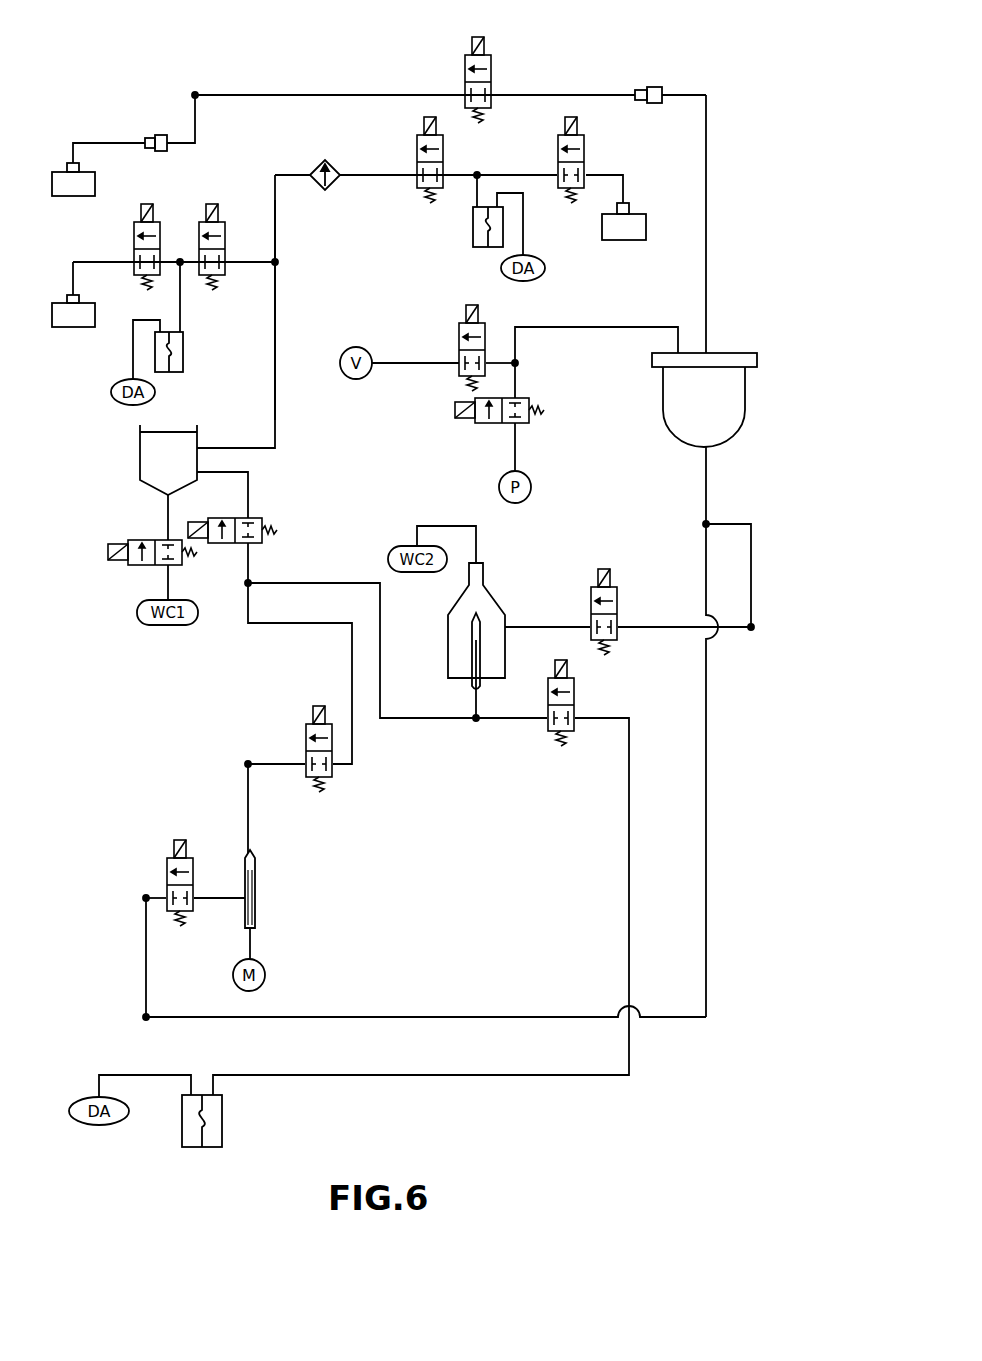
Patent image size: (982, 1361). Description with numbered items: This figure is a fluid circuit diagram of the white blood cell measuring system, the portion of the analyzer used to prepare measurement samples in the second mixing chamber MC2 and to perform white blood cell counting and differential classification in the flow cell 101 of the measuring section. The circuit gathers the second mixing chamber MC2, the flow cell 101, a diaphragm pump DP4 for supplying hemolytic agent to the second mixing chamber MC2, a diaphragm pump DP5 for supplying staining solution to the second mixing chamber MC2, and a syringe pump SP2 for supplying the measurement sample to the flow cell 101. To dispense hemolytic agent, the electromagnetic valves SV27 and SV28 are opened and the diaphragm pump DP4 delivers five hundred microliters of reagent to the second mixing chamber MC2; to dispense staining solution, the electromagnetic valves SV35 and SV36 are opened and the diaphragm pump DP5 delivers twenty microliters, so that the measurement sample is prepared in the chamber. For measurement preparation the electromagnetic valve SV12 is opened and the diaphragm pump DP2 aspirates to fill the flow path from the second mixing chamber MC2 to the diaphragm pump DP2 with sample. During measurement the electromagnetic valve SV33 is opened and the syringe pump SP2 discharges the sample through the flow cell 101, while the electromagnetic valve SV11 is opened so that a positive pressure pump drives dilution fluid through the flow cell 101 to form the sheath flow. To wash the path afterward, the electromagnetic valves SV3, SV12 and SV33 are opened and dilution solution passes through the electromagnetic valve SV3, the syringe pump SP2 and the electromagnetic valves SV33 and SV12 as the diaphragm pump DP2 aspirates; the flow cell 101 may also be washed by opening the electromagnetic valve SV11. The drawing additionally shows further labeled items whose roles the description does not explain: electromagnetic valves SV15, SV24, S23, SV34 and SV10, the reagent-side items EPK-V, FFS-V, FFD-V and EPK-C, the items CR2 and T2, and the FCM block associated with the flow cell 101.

The solenoid valve SV15 is at (475, 68).
The electromagnetic valve SV27 is at (404, 160).
The electromagnetic valve SV28 is at (597, 160).
The electromagnetic valve SV36 is at (139, 236).
The electromagnetic valve SV35 is at (213, 236).
The solenoid valve SV24 is at (446, 348).
The solenoid valve S23 is at (520, 410).
The solenoid valve SV34 is at (232, 517).
The solenoid valve SV10 is at (152, 539).
The electromagnetic valve SV11 is at (598, 599).
The electromagnetic valve SV12 is at (552, 694).
The electromagnetic valve SV33 is at (309, 738).
The electromagnetic valve SV3 is at (183, 899).
The electrode pad cleaning valve EPK-V is at (67, 196).
The flow sensor valve FFS-V is at (67, 327).
The flow detector valve FFD-V is at (612, 240).
The electrode pad cleaning container EPK-C is at (678, 447).
The circuit line CR2 is at (283, 262).
The tube T2 is at (275, 300).
The diaphragm pump DP4 is at (473, 236).
The diaphragm pump DP5 is at (183, 352).
The diaphragm pump DP2 is at (225, 1108).
The second mixing chamber MC2 is at (197, 440).
The flow control module FCM is at (454, 640).
The flow cell 101 is at (502, 602).
The syringe pump SP2 is at (257, 870).